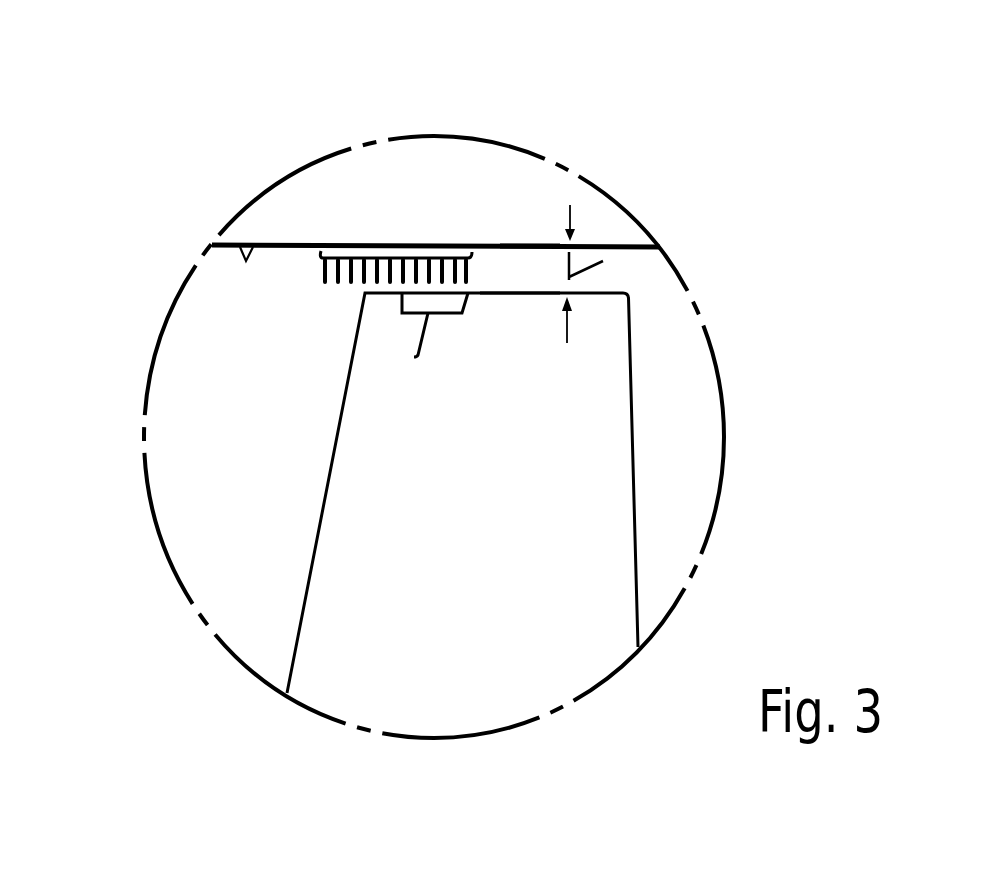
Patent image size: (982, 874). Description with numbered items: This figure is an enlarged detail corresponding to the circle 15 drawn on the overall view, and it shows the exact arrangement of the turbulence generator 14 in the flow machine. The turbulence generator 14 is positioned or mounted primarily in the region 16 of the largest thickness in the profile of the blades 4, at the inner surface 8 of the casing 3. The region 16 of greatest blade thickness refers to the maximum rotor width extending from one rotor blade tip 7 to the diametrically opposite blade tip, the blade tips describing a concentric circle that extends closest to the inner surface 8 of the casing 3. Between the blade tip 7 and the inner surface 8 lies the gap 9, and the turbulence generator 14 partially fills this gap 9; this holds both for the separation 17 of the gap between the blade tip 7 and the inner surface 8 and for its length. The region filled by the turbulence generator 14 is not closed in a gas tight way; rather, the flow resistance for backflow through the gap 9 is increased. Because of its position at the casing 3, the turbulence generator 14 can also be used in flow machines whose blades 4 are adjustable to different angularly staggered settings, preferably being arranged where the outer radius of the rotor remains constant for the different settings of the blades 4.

The casing 3 is at (528, 245).
The blades 4 is at (545, 440).
The rotor blade tip 7 is at (522, 293).
The inner surface 8 is at (243, 245).
The gap 9 is at (553, 277).
The turbulence generator 14 is at (357, 255).
The circle 15 is at (711, 338).
The region of largest thickness 16 is at (414, 357).
The separation 17 is at (603, 261).